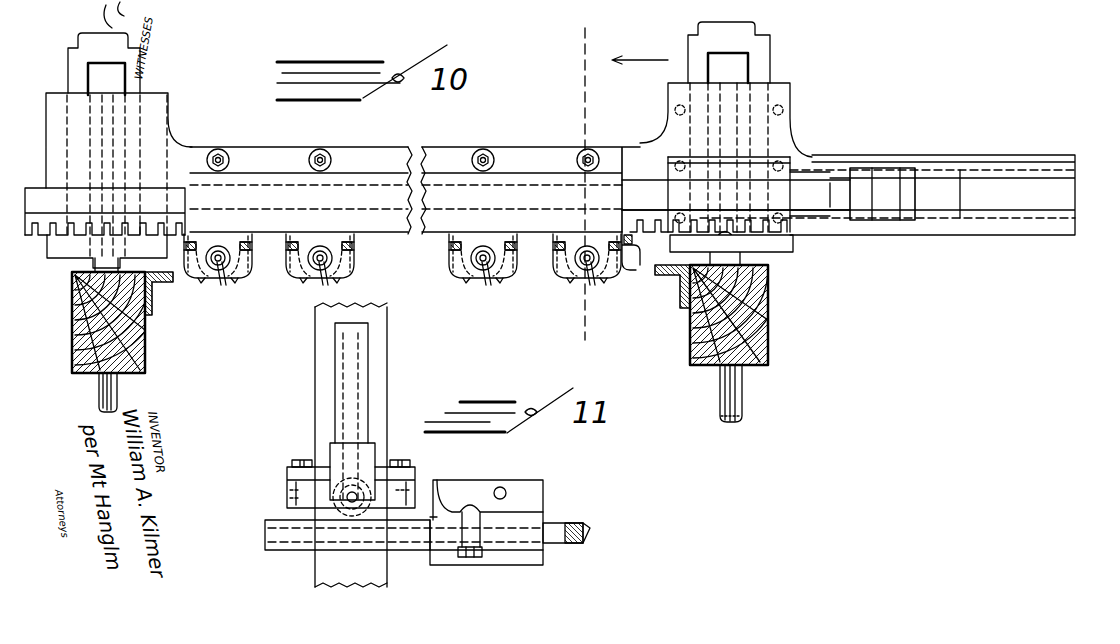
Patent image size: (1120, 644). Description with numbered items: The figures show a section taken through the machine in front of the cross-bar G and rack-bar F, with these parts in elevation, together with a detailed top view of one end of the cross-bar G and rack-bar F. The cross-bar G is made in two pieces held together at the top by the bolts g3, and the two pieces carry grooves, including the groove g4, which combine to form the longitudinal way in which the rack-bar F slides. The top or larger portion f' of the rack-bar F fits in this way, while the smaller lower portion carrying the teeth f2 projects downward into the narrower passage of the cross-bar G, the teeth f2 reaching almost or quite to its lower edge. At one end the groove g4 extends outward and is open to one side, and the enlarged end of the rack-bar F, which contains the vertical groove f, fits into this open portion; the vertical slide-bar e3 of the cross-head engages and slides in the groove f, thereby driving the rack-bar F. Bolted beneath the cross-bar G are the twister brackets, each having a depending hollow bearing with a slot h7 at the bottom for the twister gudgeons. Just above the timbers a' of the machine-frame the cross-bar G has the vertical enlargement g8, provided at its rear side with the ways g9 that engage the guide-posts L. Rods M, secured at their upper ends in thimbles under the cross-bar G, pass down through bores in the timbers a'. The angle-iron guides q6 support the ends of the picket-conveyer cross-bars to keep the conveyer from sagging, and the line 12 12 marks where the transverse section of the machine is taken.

In FIG. 10, the vertical enlargement g8 is at (148, 120).
In FIG. 11, the vertical enlargement g8 is at (412, 492).
In FIG. 10, the bolts g3 is at (485, 150).
In FIG. 10, the groove g4 is at (1058, 195).
In FIG. 11, the ways g9 is at (385, 478).
In FIG. 10, the vertical slide-bar e3 is at (880, 165).
In FIG. 10, the vertical groove f is at (882, 194).
In FIG. 10, the top or larger portion of the rack-bar f' is at (810, 194).
In FIG. 10, the teeth f2 is at (637, 251).
In FIG. 10, the rack-bar F is at (736, 195).
In FIG. 11, the rack-bar F is at (275, 525).
In FIG. 10, the cross-bar G is at (812, 128).
In FIG. 11, the cross-bar G is at (506, 502).
In FIG. 10, the slot h7 is at (224, 283).
In FIG. 10, the angle-iron guides q6 is at (417, 290).
In FIG. 10, the timbers a' is at (413, 319).
In FIG. 10, the rods M is at (447, 393).
In FIG. 11, the guide-posts L is at (361, 445).
In FIG. 10, the section line 12 is at (586, 184).